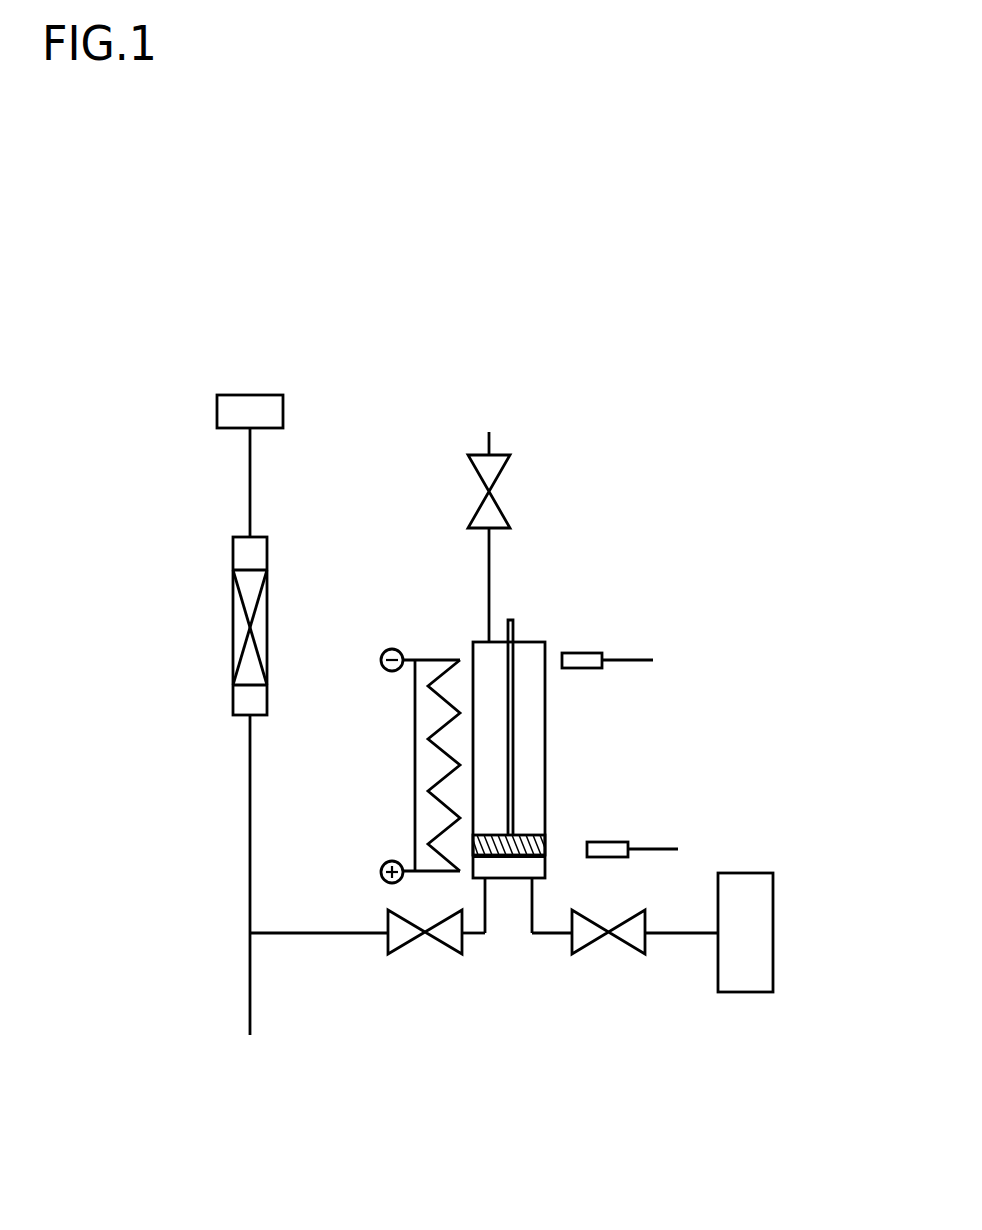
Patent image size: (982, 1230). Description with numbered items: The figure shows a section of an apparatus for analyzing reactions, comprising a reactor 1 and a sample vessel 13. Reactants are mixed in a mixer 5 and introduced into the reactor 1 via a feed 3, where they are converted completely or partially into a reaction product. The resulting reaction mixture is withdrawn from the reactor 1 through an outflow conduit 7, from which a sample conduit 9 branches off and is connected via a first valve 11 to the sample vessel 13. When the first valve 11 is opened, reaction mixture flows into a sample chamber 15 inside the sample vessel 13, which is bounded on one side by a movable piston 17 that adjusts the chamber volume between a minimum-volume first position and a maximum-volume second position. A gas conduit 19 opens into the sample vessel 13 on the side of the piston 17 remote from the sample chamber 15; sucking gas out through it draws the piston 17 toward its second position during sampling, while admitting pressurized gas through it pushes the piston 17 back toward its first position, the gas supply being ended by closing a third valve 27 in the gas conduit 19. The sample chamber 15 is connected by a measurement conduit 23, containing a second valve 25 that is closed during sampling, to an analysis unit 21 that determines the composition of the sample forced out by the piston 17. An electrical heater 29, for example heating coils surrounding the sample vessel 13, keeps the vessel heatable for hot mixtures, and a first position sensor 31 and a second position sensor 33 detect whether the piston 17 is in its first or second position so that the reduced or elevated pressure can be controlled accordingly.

The reactor 1 is at (233, 637).
The feed 3 is at (250, 481).
The mixer 5 is at (237, 395).
The outflow conduit 7 is at (250, 822).
The sample conduit 9 is at (333, 933).
The first valve 11 is at (412, 945).
The sample vessel 13 is at (545, 752).
The sample chamber 15 is at (506, 866).
The piston 17 is at (522, 843).
The gas conduit 19 is at (489, 578).
The analysis unit 21 is at (773, 909).
The measurement conduit 23 is at (683, 933).
The second valve 25 is at (592, 945).
The third valve 27 is at (500, 475).
The electrical heater 29 is at (432, 660).
The first position sensor 31 is at (653, 849).
The second position sensor 33 is at (628, 660).